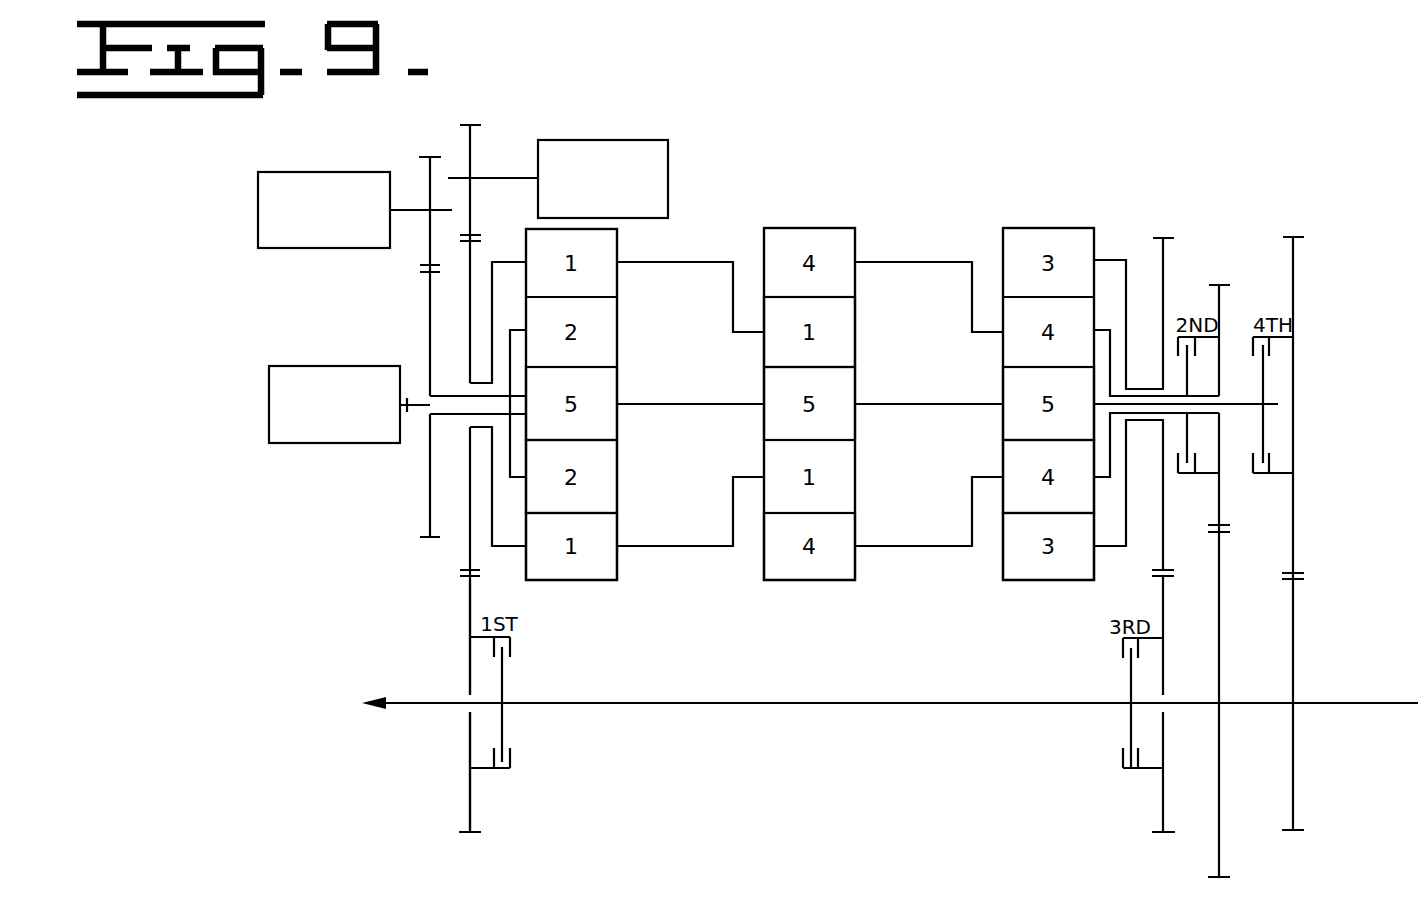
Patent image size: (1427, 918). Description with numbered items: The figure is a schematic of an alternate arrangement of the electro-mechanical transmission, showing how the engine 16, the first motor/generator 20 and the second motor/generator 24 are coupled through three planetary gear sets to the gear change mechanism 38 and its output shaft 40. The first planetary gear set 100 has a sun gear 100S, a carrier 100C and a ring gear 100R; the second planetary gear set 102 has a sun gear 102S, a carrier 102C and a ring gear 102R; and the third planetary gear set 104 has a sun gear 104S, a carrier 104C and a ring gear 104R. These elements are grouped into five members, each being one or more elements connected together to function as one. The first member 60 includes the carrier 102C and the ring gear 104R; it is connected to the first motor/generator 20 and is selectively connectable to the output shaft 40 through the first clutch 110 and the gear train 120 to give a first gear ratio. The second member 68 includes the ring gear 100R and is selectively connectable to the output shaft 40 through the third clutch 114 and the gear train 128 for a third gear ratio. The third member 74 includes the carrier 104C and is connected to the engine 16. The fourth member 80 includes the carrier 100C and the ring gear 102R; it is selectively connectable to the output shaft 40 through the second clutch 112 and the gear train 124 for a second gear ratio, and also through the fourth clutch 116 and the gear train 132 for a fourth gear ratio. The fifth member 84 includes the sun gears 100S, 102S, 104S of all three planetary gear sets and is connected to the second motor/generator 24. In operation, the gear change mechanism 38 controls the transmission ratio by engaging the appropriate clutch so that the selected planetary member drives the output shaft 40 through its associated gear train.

The engine 16 is at (345, 172).
The first motor/generator 20 is at (613, 140).
The second motor/generator 24 is at (344, 366).
The gear change mechanism 38 is at (750, 750).
The output shaft 40 is at (690, 703).
The first member 60 is at (520, 263).
The second member 68 is at (1110, 260).
The third member 74 is at (516, 330).
The fourth member 80 is at (884, 262).
The fifth member 84 is at (416, 412).
The first planetary gear set 100 is at (1035, 598).
The sun gear 100S is at (1002, 390).
The carrier 100C is at (1001, 452).
The ring gear 100R is at (1002, 560).
The second planetary gear set 102 is at (803, 598).
The sun gear 102S is at (856, 430).
The carrier 102C is at (856, 305).
The ring gear 102R is at (856, 558).
The third planetary gear set 104 is at (571, 598).
The sun gear 104S is at (617, 389).
The carrier 104C is at (617, 505).
The ring gear 104R is at (617, 570).
The first clutch 110 is at (505, 770).
The second clutch 112 is at (1213, 473).
The third clutch 114 is at (1123, 768).
The fourth clutch 116 is at (1283, 473).
The gear train 120 is at (458, 786).
The gear train 124 is at (1206, 562).
The gear train 128 is at (1155, 794).
The gear train 132 is at (1282, 597).